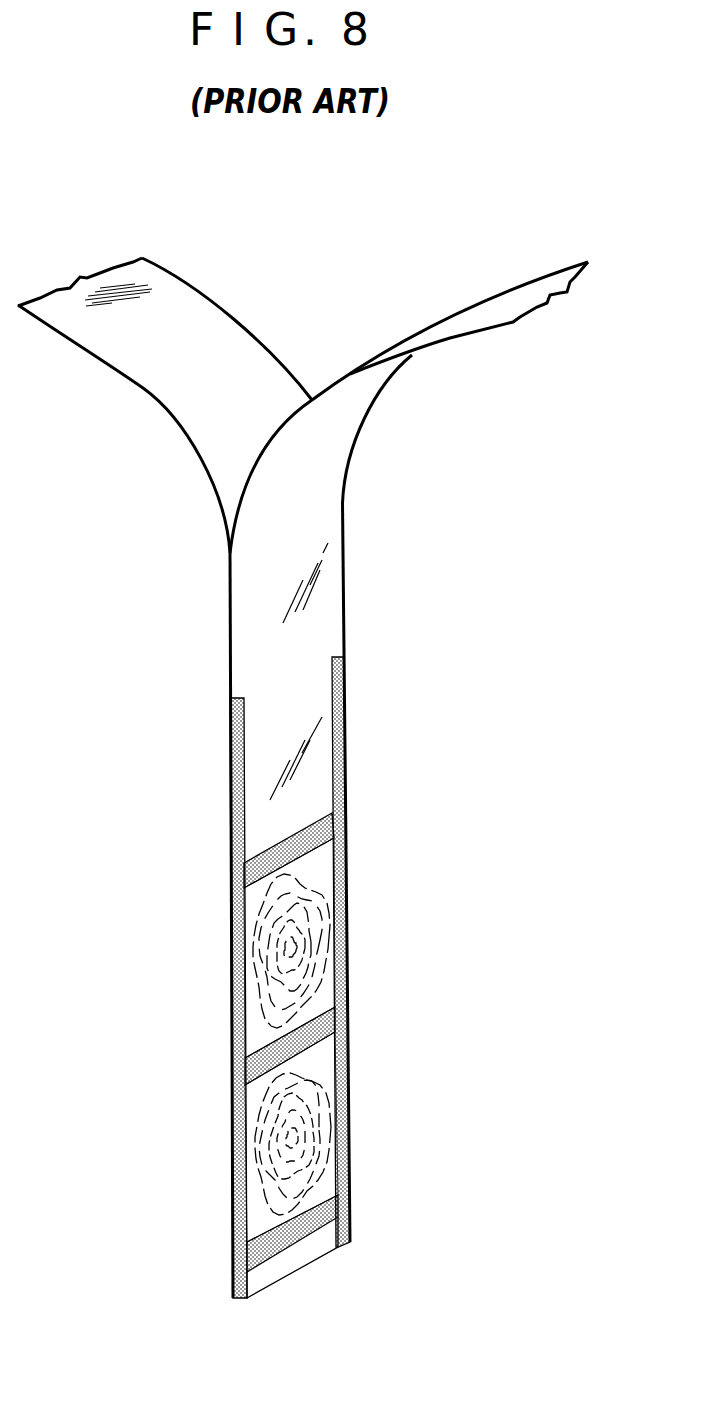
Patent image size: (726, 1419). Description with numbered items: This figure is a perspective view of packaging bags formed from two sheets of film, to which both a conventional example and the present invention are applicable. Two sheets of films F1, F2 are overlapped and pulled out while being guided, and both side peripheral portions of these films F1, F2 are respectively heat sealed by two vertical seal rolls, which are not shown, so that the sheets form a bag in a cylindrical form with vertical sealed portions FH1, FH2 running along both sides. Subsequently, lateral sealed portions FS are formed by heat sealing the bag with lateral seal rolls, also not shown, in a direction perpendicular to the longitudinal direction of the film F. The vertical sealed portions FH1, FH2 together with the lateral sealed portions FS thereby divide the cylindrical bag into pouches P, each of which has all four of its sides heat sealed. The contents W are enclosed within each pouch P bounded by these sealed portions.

The film F1 is at (173, 367).
The film F2 is at (470, 322).
The film F is at (250, 617).
The vertical sealed portion FH1 is at (200, 1168).
The vertical sealed portion FH2 is at (348, 733).
The lateral sealed portion FS is at (315, 1283).
The wafer / contents W is at (285, 952).
The pouch P is at (368, 932).